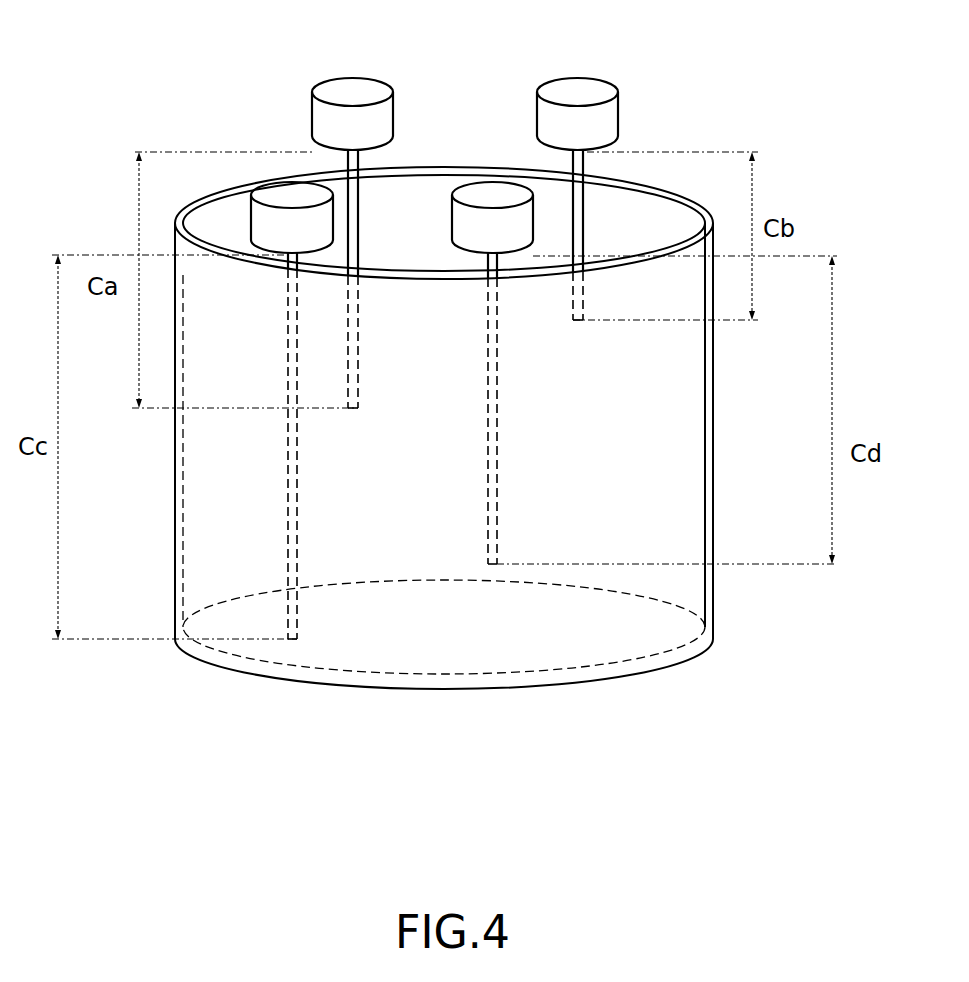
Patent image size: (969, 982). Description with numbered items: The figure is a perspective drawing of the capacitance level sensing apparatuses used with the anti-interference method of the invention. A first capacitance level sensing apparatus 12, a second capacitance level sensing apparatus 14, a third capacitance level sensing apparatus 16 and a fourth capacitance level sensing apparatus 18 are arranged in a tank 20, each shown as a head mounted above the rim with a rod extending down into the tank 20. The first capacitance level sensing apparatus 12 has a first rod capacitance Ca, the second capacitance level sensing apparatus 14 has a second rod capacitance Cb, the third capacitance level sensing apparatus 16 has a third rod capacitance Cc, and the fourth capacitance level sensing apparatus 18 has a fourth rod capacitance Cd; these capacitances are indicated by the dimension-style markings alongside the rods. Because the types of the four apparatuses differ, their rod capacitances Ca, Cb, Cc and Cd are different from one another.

The first capacitance level sensing apparatus 12 is at (352, 92).
The second capacitance level sensing apparatus 14 is at (577, 95).
The third capacitance level sensing apparatus 16 is at (282, 195).
The fourth capacitance level sensing apparatus 18 is at (493, 195).
The tank 20 is at (692, 586).